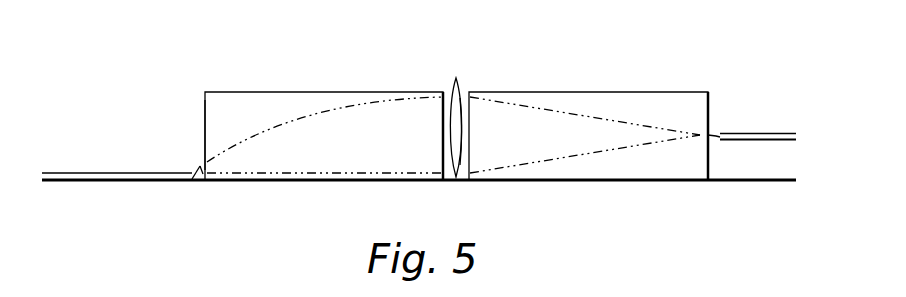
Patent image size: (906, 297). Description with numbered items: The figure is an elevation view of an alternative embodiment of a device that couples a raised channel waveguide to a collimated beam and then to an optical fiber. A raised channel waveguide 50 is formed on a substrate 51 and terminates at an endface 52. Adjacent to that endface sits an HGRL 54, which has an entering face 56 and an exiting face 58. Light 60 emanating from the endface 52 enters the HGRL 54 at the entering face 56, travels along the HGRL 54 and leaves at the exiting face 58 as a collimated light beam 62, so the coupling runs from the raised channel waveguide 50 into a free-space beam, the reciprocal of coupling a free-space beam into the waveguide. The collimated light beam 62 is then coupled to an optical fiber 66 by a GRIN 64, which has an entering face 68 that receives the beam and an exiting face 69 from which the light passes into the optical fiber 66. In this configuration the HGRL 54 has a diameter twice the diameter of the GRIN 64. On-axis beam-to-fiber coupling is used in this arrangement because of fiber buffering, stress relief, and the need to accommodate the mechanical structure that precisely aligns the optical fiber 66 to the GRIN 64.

The raised channel waveguide 50 is at (82, 172).
The substrate 51 is at (113, 212).
The endface 52 is at (198, 184).
The HGRL 54 is at (313, 92).
The entering face 56 is at (205, 128).
The exiting face 58 is at (443, 148).
The light 60 is at (203, 181).
The collimated light beam 62 is at (462, 67).
The GRIN 64 is at (588, 92).
The optical fiber 66 is at (775, 133).
The entering face 68 is at (471, 138).
The exiting face 69 is at (708, 108).